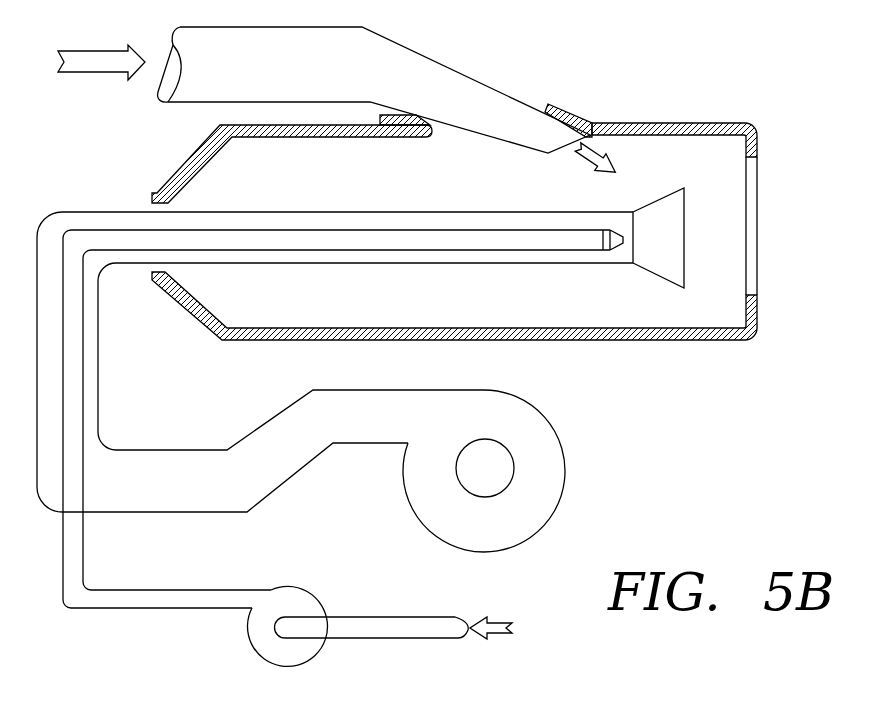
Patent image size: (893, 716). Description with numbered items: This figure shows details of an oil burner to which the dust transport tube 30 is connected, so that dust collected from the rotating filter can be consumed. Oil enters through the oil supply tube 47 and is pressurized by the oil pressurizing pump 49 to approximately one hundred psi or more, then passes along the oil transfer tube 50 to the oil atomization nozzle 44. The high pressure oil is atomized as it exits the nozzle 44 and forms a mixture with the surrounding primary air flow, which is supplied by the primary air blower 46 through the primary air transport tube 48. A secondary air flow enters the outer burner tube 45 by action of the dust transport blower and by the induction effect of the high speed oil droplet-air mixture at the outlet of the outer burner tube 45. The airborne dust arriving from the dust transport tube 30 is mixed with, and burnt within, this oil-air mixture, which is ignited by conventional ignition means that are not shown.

The dust transport tube 30 is at (417, 77).
The oil atomization nozzle 44 is at (622, 234).
The outer burner tube 45 is at (635, 147).
The primary air blower 46 is at (527, 432).
The oil supply tube 47 is at (425, 622).
The primary air transport tube 48 is at (207, 470).
The oil pressurizing pump 49 is at (308, 608).
The oil transfer tube 50 is at (70, 563).